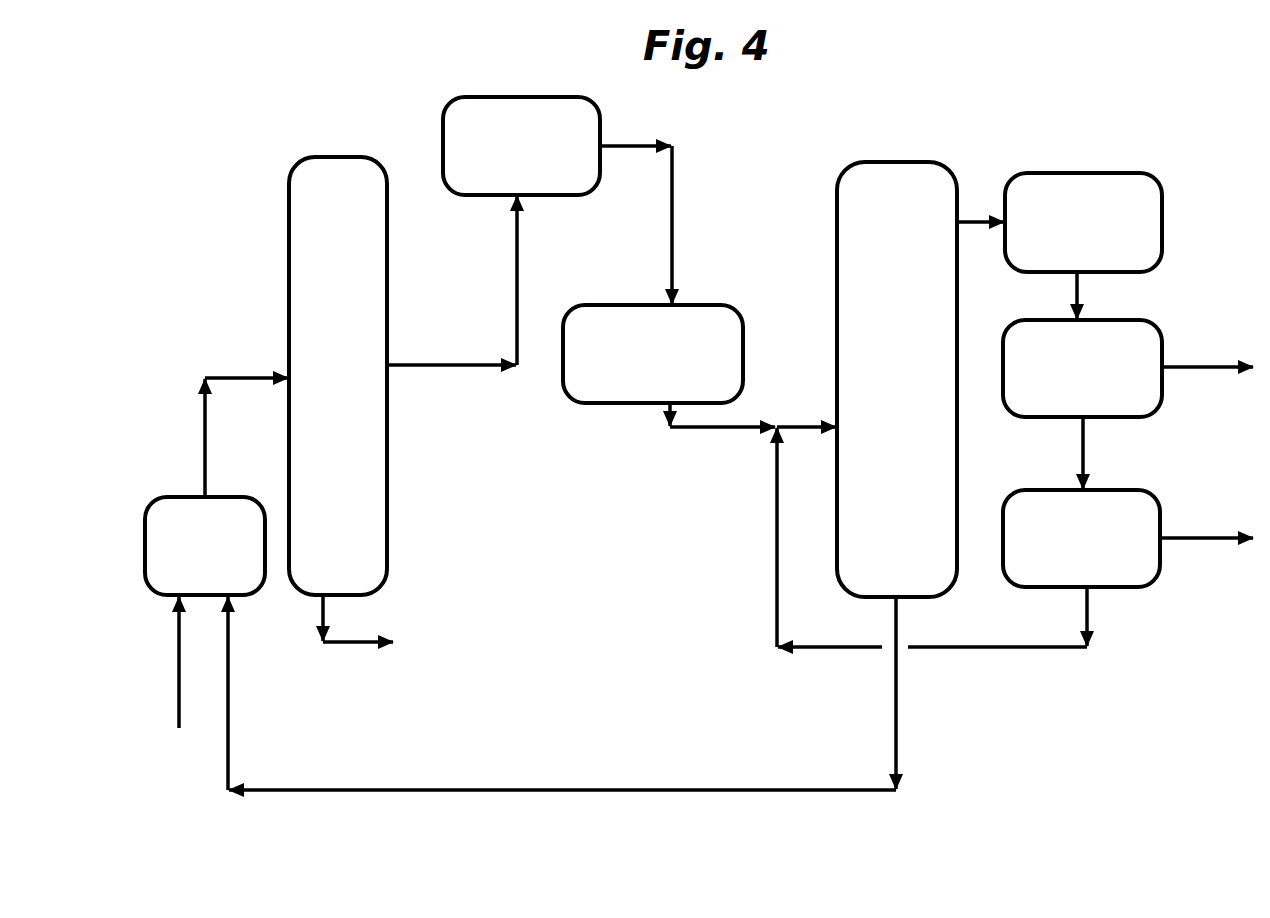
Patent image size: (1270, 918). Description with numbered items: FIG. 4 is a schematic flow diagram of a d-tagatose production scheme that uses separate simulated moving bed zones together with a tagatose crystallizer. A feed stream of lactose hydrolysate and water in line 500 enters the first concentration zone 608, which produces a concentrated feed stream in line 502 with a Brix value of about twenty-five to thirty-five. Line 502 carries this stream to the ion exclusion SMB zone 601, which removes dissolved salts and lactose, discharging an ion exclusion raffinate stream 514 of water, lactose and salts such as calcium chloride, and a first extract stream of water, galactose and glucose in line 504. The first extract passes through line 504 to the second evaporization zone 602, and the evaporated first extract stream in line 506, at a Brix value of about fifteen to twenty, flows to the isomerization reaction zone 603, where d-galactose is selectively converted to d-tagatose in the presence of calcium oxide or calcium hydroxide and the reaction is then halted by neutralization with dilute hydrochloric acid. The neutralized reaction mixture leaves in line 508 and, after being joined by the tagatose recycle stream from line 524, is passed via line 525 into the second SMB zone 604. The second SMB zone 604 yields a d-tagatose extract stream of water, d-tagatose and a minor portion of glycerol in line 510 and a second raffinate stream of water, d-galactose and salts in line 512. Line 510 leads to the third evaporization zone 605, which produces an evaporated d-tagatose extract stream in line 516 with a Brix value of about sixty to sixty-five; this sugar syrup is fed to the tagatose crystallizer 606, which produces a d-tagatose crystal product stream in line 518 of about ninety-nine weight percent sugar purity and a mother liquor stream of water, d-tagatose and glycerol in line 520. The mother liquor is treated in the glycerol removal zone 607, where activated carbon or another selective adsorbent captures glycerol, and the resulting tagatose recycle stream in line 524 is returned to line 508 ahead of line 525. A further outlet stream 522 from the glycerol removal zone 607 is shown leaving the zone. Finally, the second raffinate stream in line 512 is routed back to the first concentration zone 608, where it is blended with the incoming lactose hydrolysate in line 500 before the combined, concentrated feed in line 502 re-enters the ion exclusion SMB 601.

The feed stream line 500 is at (173, 680).
The concentrated feed stream line 502 is at (240, 374).
The first extract stream line 504 is at (393, 364).
The evaporated first extract stream line 506 is at (668, 233).
The neutralized isomerization reaction mixture line 508 is at (683, 430).
The d-tagatose extract stream line 510 is at (993, 217).
The second raffinate stream line 512 is at (230, 690).
The ion exclusion raffinate stream 514 is at (363, 642).
The evaporated d-tagatose extract stream line 516 is at (1080, 290).
The d-tagatose crystal product stream line 518 is at (1183, 372).
The mother liquor stream line 520 is at (1082, 460).
The product stream 522 is at (1235, 542).
The tagatose recycle stream line 524 is at (775, 598).
The second SMB zone feed line 525 is at (805, 426).
The ion exclusion SMB zone 601 is at (338, 376).
The second evaporization zone 602 is at (521, 146).
The isomerization reaction zone 603 is at (653, 354).
The second SMB zone 604 is at (897, 379).
The third evaporization zone 605 is at (1083, 222).
The tagatose crystallizer 606 is at (1082, 368).
The glycerol removal zone 607 is at (1081, 538).
The first concentration zone 608 is at (205, 546).